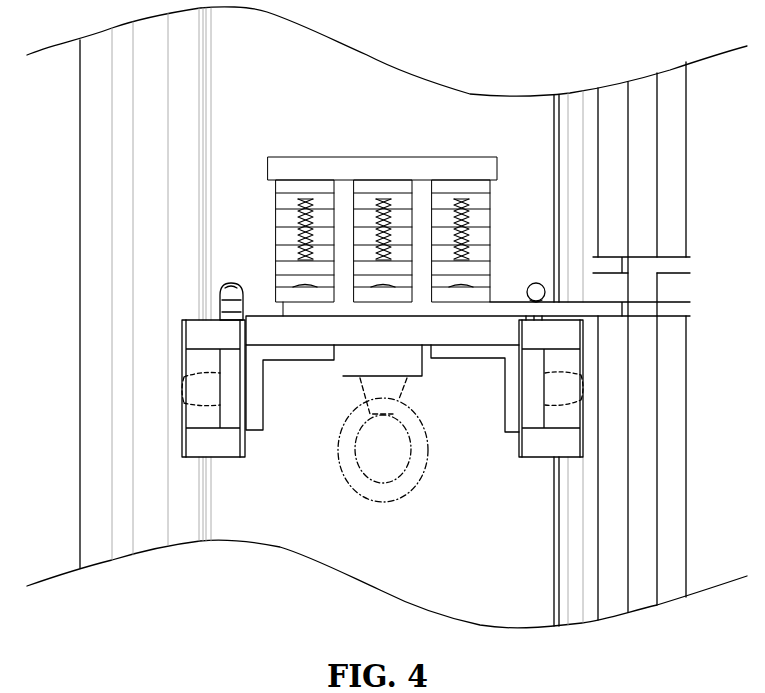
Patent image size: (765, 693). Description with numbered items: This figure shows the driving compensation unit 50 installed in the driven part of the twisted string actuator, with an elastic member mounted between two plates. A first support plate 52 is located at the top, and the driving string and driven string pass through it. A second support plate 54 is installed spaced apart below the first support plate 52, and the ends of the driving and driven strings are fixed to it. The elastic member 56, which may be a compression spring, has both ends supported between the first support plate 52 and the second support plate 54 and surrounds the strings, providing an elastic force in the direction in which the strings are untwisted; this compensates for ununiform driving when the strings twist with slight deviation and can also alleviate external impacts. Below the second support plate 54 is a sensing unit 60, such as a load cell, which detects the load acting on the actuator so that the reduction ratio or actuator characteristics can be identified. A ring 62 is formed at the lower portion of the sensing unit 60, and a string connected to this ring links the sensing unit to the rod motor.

The driving compensation unit 50 is at (250, 205).
The first support plate 52 is at (445, 167).
The second support plate 54 is at (397, 267).
The elastic member 56 is at (298, 240).
The sensing unit 60 is at (407, 364).
The ring 62 is at (360, 484).